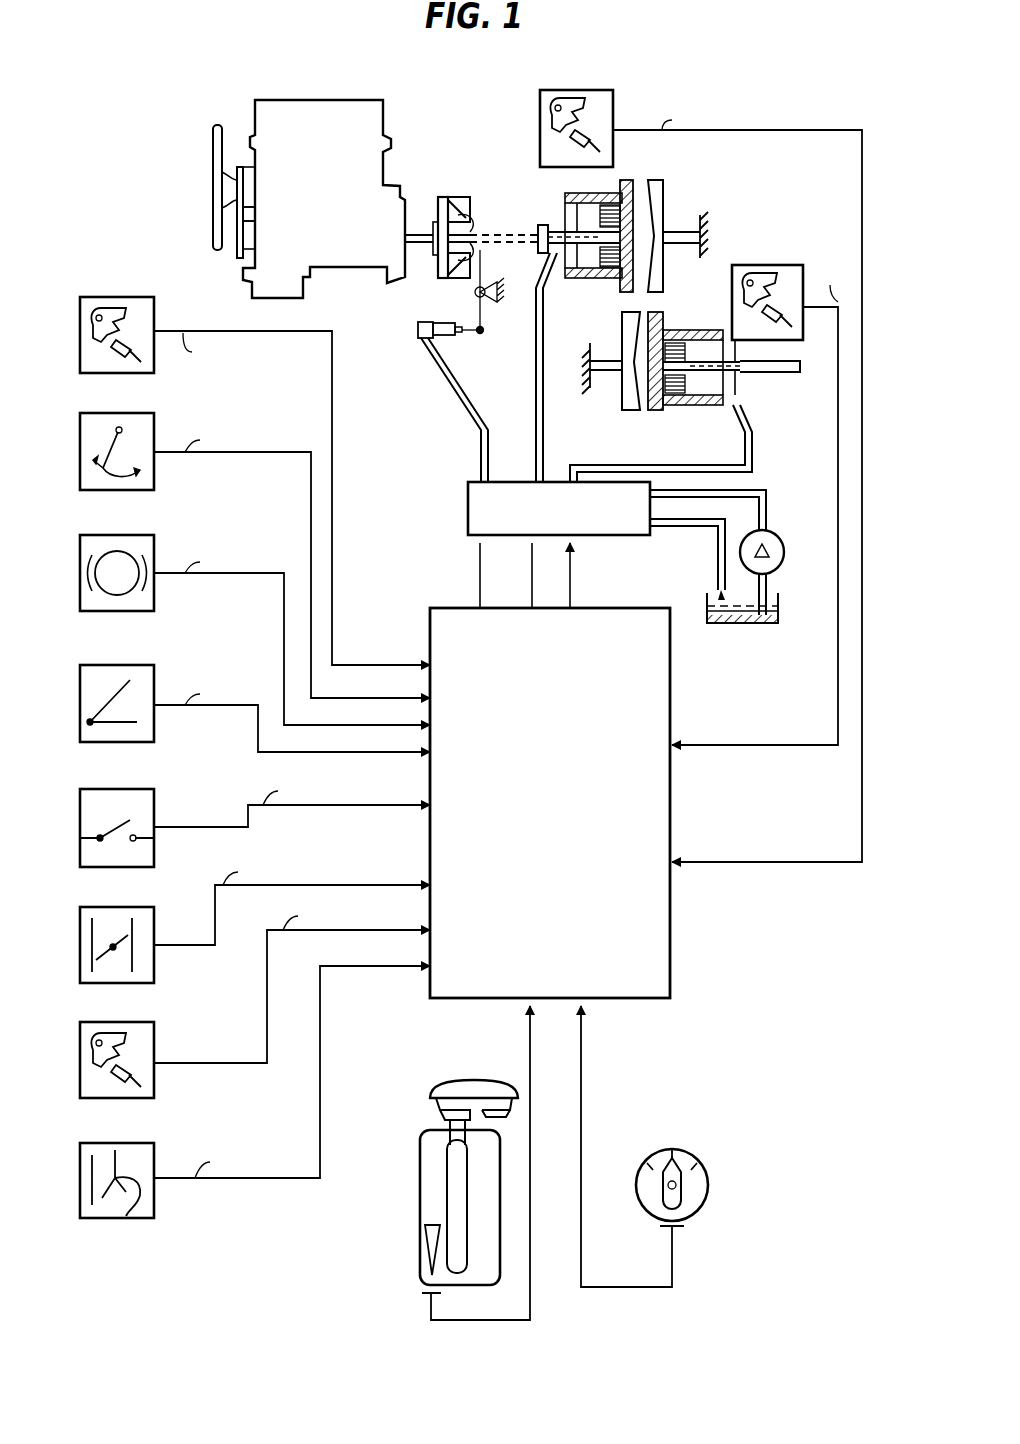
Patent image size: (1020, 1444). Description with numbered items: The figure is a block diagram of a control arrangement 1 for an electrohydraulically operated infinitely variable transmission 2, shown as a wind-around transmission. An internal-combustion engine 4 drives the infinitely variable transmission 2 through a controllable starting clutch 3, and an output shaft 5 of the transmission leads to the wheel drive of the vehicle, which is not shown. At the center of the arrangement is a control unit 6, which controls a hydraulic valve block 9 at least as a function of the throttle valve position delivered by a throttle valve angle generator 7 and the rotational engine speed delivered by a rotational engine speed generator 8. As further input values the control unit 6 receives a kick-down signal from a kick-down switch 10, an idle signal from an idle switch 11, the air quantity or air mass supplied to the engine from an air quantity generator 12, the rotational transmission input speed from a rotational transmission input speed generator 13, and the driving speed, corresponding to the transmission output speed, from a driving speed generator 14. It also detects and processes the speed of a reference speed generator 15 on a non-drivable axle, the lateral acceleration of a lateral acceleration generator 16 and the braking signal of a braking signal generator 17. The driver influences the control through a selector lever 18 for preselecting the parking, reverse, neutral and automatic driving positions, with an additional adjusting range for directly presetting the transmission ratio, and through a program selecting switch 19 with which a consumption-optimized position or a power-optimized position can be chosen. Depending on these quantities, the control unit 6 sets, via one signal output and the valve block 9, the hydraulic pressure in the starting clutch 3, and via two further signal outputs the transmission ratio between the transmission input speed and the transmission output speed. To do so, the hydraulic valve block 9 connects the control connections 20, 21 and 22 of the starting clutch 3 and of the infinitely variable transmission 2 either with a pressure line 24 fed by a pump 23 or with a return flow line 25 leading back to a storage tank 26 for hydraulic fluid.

The control arrangement 1 is at (588, 789).
The infinitely variable transmission 2 is at (726, 216).
The starting clutch 3 is at (465, 185).
The internal-combustion engine 4 is at (405, 152).
The output shaft 5 is at (775, 380).
The control unit 6 is at (630, 608).
The throttle valve angle generator 7 is at (108, 907).
The rotational engine speed generator 8 is at (108, 1022).
The hydraulic valve block 9 is at (466, 504).
The kick-down switch 10 is at (108, 665).
The idle switch 11 is at (108, 789).
The air quantity generator 12 is at (108, 1143).
The rotational transmission input speed generator 13 is at (560, 90).
The driving speed generator 14 is at (742, 265).
The reference speed generator 15 is at (108, 297).
The lateral acceleration generator 16 is at (108, 413).
The braking signal generator 17 is at (108, 535).
The selector lever 18 is at (420, 1193).
The program selecting switch 19 is at (643, 1205).
The control connection 20 is at (462, 372).
The control connection 21 is at (536, 358).
The control connection 22 is at (612, 458).
The pump 23 is at (777, 536).
The pressure line 24 is at (750, 492).
The return flow line 25 is at (714, 566).
The storage tank 26 is at (740, 628).